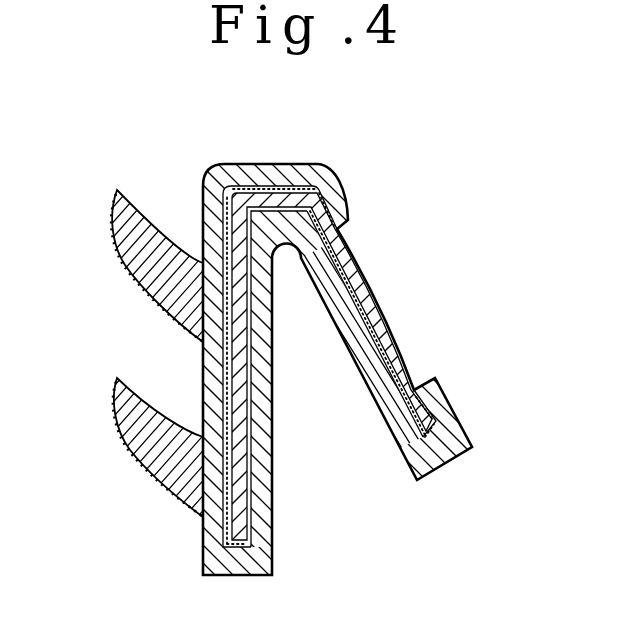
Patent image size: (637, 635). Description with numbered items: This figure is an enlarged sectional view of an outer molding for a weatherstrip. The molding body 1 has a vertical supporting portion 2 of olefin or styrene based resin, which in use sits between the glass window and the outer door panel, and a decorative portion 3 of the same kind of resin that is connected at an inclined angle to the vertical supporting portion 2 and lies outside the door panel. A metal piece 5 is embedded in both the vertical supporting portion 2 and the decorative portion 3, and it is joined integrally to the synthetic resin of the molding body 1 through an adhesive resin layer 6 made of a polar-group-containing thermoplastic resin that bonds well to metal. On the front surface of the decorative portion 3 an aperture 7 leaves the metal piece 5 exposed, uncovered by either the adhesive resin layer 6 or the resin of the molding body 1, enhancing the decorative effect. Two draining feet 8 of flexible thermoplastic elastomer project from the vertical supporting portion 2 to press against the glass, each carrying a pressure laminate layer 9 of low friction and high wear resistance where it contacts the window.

The molding body 1 is at (310, 156).
The vertical supporting portion 2 is at (255, 368).
The decorative portion 3 is at (336, 273).
The metal piece 5 is at (382, 302).
The adhesive resin layer 6 is at (252, 189).
The aperture 7 is at (403, 329).
The draining foot 8 is at (133, 243).
The pressure laminate layer 9 is at (140, 291).